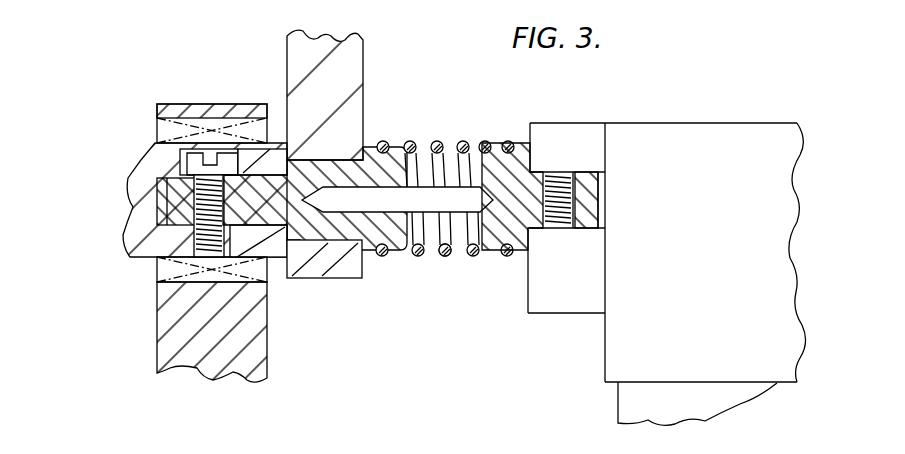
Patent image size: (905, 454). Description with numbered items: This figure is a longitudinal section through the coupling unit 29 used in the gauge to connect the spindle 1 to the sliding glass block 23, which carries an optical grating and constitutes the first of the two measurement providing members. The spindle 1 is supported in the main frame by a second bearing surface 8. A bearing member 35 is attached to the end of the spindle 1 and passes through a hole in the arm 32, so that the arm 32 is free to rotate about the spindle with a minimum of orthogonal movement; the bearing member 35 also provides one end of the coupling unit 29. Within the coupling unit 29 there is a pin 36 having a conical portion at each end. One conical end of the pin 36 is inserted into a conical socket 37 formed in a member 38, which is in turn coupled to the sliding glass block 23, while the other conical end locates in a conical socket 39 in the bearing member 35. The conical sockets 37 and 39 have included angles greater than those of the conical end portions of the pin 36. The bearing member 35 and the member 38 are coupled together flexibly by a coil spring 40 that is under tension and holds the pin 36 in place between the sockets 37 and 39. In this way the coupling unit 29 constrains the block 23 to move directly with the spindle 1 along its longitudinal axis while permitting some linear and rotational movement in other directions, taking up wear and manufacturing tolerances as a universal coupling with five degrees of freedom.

The spindle 1 is at (140, 166).
The second bearing surface 8 is at (218, 130).
The glass block 23 is at (672, 148).
The coupling unit 29 is at (415, 265).
The arm 32 is at (363, 86).
The bearing member 35 is at (322, 228).
The pin 36 is at (438, 204).
The conical socket 37 is at (527, 146).
The member 38 is at (502, 251).
The conical socket 39 is at (345, 230).
The coil spring 40 is at (446, 262).